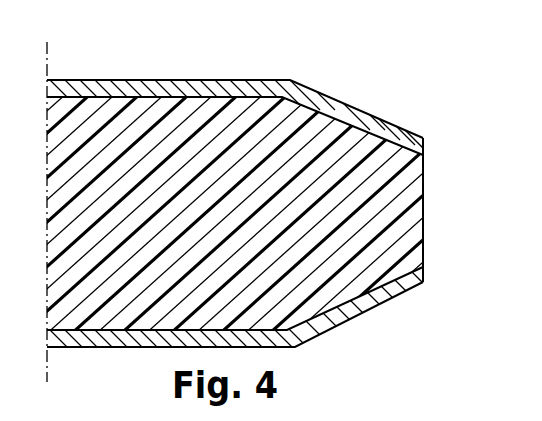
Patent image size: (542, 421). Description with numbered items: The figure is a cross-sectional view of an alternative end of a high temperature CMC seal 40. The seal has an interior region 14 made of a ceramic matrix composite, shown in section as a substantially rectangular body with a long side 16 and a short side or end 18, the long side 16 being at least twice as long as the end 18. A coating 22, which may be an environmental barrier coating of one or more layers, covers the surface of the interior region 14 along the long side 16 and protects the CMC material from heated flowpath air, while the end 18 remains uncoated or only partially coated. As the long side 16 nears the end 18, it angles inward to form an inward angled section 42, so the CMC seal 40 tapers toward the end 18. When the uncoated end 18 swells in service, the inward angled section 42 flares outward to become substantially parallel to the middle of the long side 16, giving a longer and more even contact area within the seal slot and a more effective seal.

The CMC seal 40 is at (188, 60).
The interior region 14 is at (162, 285).
The coating 22 is at (258, 89).
The inward angled section 42 is at (373, 114).
The end 18 is at (424, 210).
The long side 16 is at (255, 337).